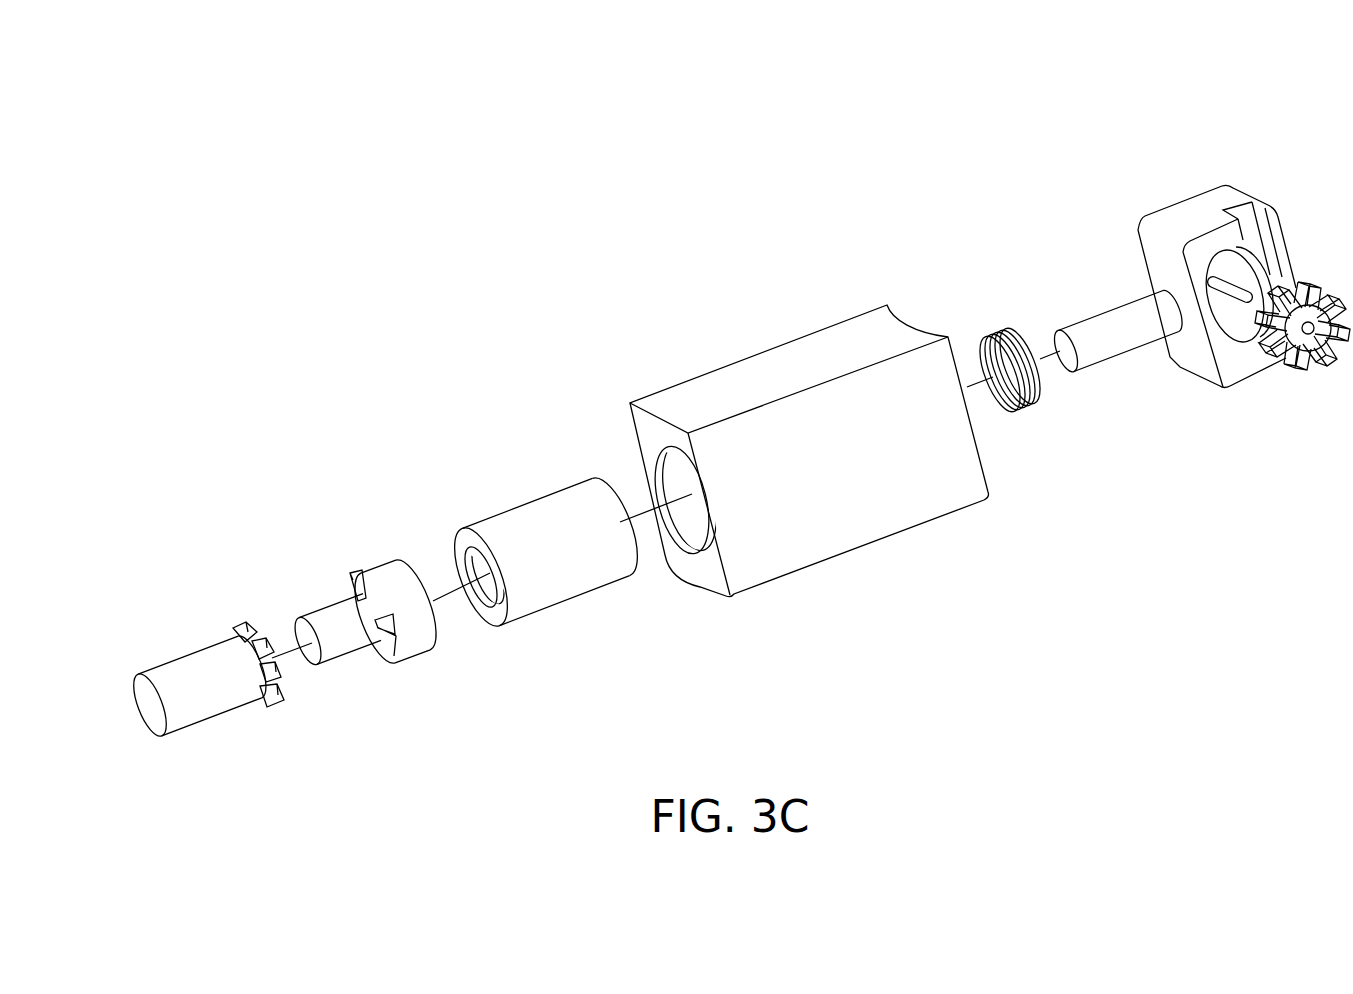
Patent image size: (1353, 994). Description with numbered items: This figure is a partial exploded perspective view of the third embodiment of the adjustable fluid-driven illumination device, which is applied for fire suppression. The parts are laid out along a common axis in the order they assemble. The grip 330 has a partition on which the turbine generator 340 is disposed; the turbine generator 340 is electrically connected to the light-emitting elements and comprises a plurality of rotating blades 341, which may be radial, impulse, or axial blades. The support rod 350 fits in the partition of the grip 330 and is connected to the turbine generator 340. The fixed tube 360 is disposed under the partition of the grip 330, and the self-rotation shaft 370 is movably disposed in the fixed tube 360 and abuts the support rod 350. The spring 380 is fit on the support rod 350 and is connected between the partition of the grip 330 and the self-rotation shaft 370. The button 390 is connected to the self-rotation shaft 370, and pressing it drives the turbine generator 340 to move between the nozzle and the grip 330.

The grip 330 is at (749, 354).
The turbine generator 340 is at (1178, 190).
The rotating blades 341 is at (1295, 360).
The support rod 350 is at (1108, 305).
The fixed tube 360 is at (522, 503).
The self-rotation shaft 370 is at (325, 603).
The spring 380 is at (1001, 333).
The button 390 is at (184, 652).